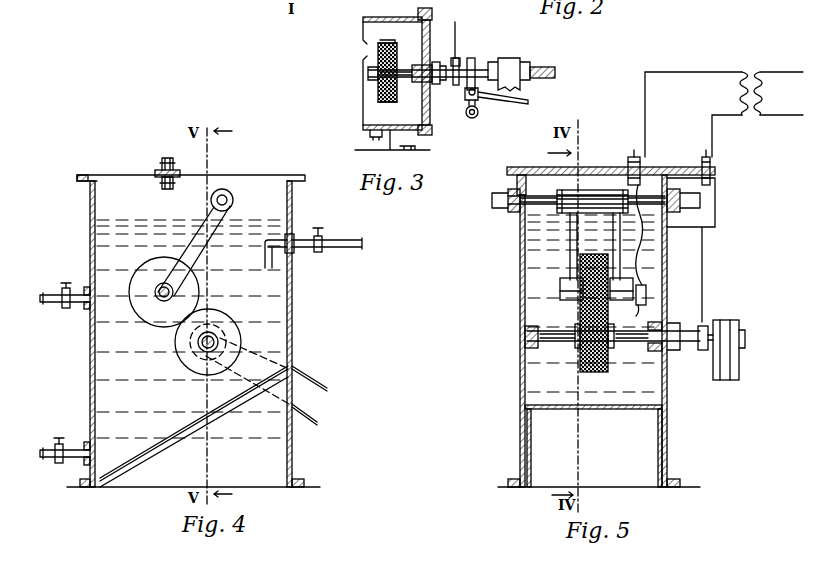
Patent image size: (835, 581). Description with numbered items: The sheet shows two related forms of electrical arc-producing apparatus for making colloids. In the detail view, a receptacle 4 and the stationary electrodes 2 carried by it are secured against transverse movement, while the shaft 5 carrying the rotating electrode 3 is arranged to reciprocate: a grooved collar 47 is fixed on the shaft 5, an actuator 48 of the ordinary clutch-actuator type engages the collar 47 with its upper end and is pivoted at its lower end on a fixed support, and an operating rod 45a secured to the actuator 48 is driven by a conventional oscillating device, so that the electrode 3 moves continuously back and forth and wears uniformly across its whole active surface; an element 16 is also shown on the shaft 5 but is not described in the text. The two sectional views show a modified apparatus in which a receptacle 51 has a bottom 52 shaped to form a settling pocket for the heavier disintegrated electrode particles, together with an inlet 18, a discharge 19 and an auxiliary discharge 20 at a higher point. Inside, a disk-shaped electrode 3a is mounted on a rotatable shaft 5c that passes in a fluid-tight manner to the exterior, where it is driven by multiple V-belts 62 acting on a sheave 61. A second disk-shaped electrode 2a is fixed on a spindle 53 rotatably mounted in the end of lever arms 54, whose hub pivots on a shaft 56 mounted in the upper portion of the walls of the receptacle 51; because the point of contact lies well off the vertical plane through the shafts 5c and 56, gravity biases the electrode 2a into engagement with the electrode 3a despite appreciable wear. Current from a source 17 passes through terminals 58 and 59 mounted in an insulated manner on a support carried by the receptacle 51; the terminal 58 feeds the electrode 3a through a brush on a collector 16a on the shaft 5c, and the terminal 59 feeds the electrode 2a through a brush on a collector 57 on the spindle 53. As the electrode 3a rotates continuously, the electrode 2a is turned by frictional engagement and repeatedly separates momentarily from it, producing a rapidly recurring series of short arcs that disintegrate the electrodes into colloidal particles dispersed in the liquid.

In FIG. 3, the stationary electrodes 2 is at (394, 43).
In FIG. 3, the rotating electrode 3 is at (393, 102).
In FIG. 3, the receptacle 4 is at (395, 17).
In FIG. 3, the shaft 5 is at (411, 69).
In FIG. 3, the collar 16 is at (459, 62).
In FIG. 3, the grooved collar 47 is at (477, 62).
In FIG. 3, the actuator 48 is at (469, 96).
In FIG. 3, the operating rod 45a is at (508, 102).
In FIG. 4, the electrode 2a is at (155, 262).
In FIG. 5, the electrode 2a is at (580, 267).
In FIG. 4, the disk-shaped electrode 3a is at (228, 322).
In FIG. 5, the disk-shaped electrode 3a is at (581, 368).
In FIG. 4, the rotatable shaft 5c is at (193, 350).
In FIG. 5, the rotatable shaft 5c is at (690, 330).
In FIG. 5, the collector 16a is at (703, 350).
In FIG. 5, the current source 17 is at (741, 93).
In FIG. 4, the inlet 18 is at (344, 240).
In FIG. 4, the discharge 19 is at (72, 460).
In FIG. 4, the auxiliary discharge 20 is at (72, 304).
In FIG. 4, the receptacle 51 is at (294, 305).
In FIG. 5, the receptacle 51 is at (519, 380).
In FIG. 4, the bottom 52 is at (190, 424).
In FIG. 5, the bottom 52 is at (570, 409).
In FIG. 5, the spindle 53 is at (561, 290).
In FIG. 5, the lever arms 54 is at (578, 244).
In FIG. 4, the shaft 56 is at (233, 193).
In FIG. 5, the shaft 56 is at (504, 215).
In FIG. 5, the collector 57 is at (640, 307).
In FIG. 5, the terminal 58 is at (700, 150).
In FIG. 5, the terminal 59 is at (634, 150).
In FIG. 5, the sheave 61 is at (742, 325).
In FIG. 4, the multiple V-belts 62 is at (321, 388).
In FIG. 5, the multiple V-belts 62 is at (726, 365).